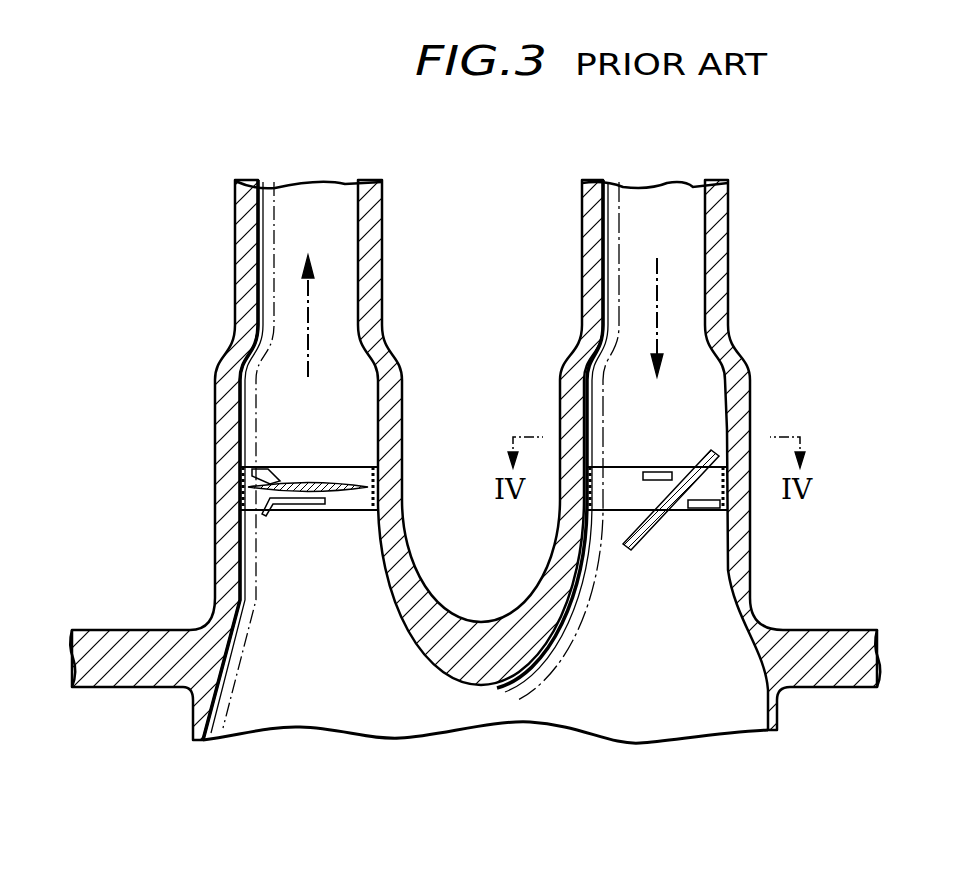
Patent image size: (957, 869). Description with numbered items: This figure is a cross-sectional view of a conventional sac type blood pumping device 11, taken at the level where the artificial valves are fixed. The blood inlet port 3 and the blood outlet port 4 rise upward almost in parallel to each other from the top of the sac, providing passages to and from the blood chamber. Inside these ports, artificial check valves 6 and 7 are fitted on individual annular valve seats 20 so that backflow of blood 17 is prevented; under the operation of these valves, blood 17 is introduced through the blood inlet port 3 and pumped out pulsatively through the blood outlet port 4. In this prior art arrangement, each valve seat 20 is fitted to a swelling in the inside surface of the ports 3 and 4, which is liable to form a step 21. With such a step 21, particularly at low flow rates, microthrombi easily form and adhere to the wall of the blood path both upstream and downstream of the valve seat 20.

The blood inlet port 3 is at (737, 410).
The blood outlet port 4 is at (394, 410).
The artificial check valve 6 is at (678, 517).
The artificial check valve 7 is at (308, 511).
The sac type blood pumping device 11 is at (162, 621).
The blood 17 is at (310, 353).
The annular valve seat 20 is at (243, 456).
The step 21 is at (375, 513).